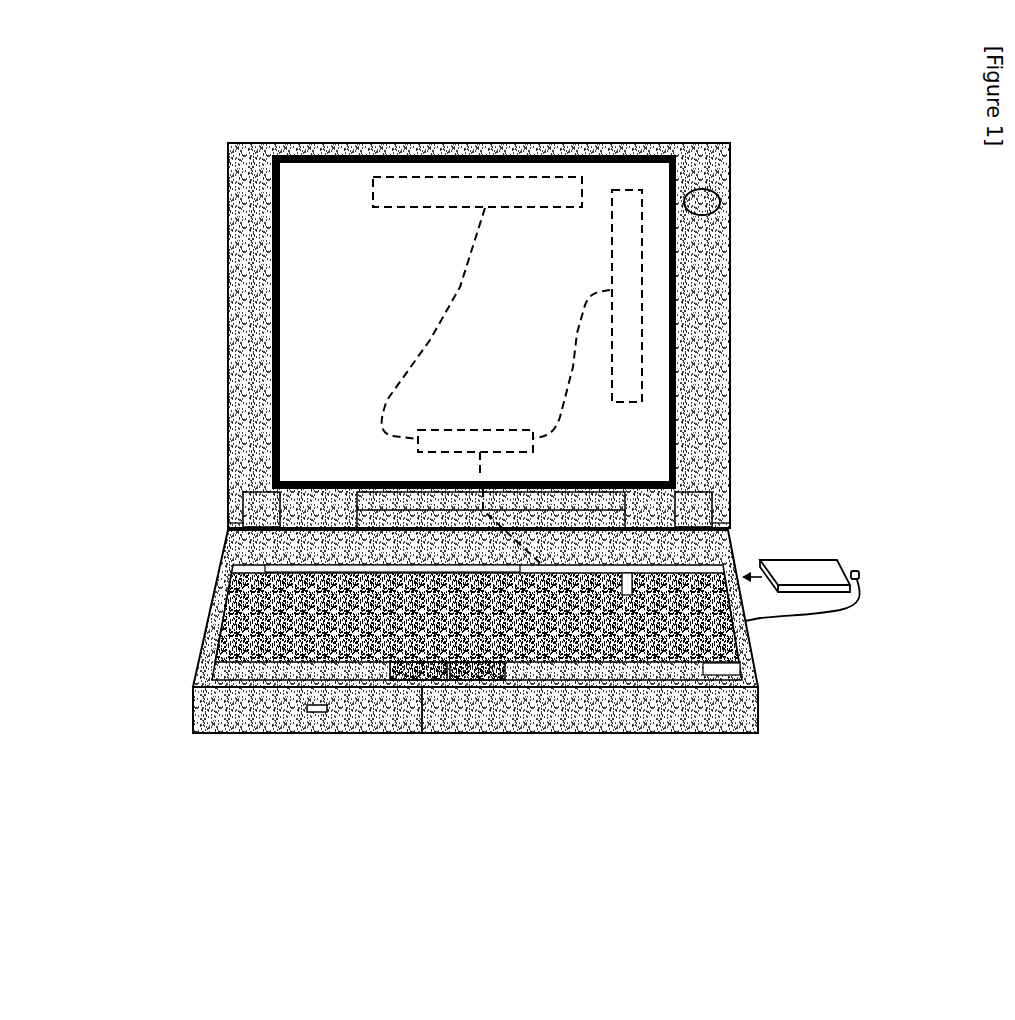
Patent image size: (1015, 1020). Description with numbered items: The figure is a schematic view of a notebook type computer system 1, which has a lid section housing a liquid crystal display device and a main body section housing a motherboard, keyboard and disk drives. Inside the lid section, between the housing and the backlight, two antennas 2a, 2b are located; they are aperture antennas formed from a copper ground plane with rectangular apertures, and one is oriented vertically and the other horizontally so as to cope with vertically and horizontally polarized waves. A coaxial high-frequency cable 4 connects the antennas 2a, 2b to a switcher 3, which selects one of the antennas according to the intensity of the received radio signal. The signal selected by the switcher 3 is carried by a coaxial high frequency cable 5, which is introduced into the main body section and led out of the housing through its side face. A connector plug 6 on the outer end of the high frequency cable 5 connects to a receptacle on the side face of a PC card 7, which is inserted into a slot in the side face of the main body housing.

The computer system 1 is at (208, 494).
The antenna 2a is at (478, 178).
The antenna 2b is at (640, 282).
The switcher 3 is at (489, 430).
The coaxial high-frequency cable 4 is at (436, 340).
The high frequency cable 5 is at (795, 617).
The connector plug 6 is at (857, 572).
The PC card 7 is at (804, 568).